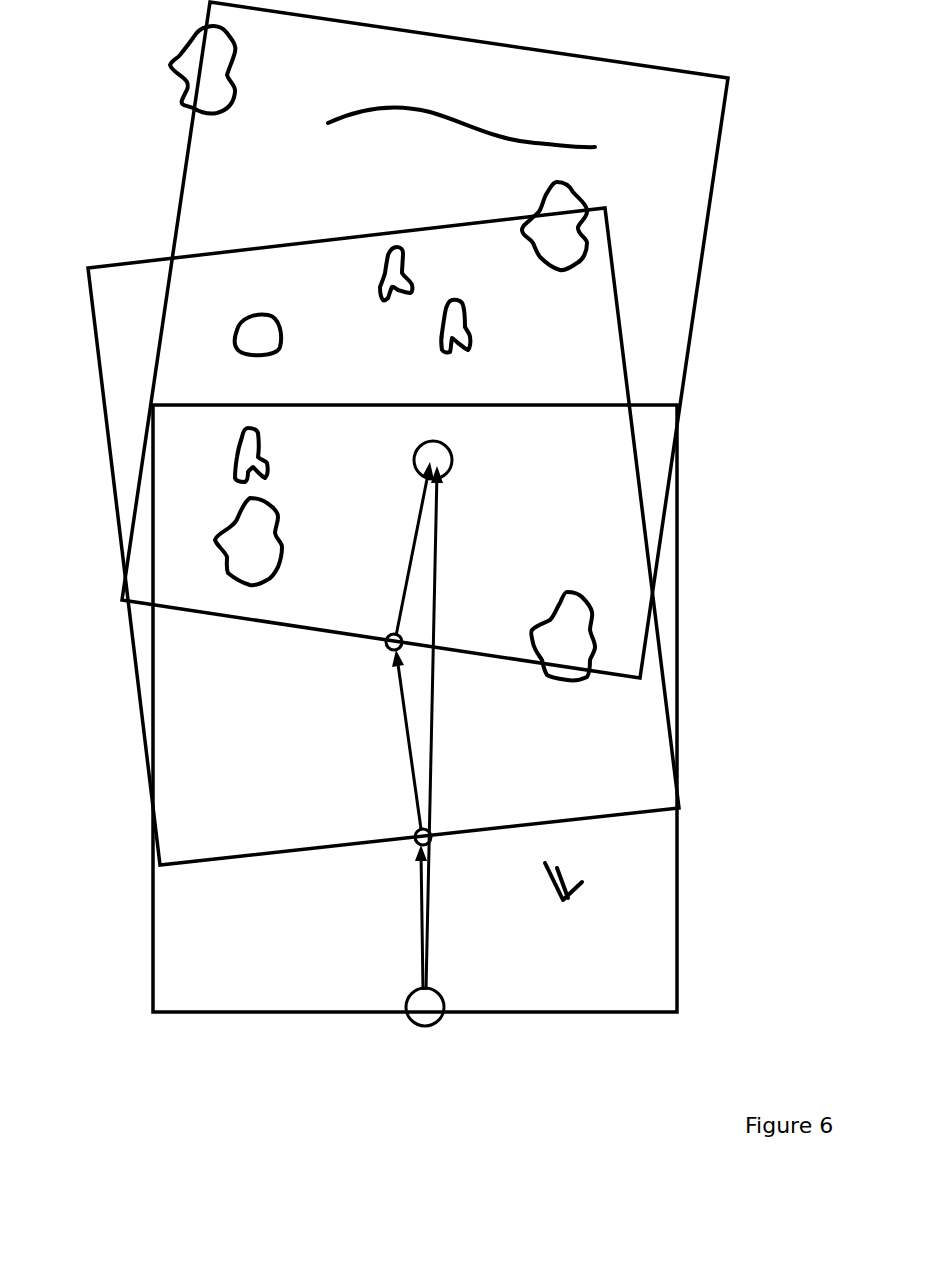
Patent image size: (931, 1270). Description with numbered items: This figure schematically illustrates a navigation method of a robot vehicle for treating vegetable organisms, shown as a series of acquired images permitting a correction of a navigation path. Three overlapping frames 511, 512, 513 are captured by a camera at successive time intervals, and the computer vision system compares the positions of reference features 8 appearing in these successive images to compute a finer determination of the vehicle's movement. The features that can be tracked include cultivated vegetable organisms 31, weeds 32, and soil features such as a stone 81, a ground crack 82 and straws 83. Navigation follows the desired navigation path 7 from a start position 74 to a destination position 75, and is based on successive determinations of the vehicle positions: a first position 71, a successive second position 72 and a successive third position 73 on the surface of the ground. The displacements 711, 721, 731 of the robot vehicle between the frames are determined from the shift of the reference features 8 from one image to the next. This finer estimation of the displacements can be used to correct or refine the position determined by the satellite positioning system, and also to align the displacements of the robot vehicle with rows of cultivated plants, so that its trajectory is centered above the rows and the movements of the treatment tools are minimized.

The navigation path 7 is at (438, 702).
The reference feature 8 is at (557, 247).
The cultivated vegetable organism 31 is at (185, 68).
The weed 32 is at (392, 263).
The first position 71 is at (413, 845).
The second position 72 is at (385, 648).
The third position 73 is at (417, 450).
The start position 74 is at (438, 1003).
The destination position 75 is at (445, 462).
The stone 81 is at (263, 330).
The ground crack 82 is at (453, 110).
The straws 83 is at (578, 890).
The image 511 is at (175, 937).
The image 512 is at (137, 648).
The image 513 is at (207, 162).
The displacement 711 is at (420, 918).
The displacement 721 is at (402, 710).
The displacement 731 is at (413, 522).